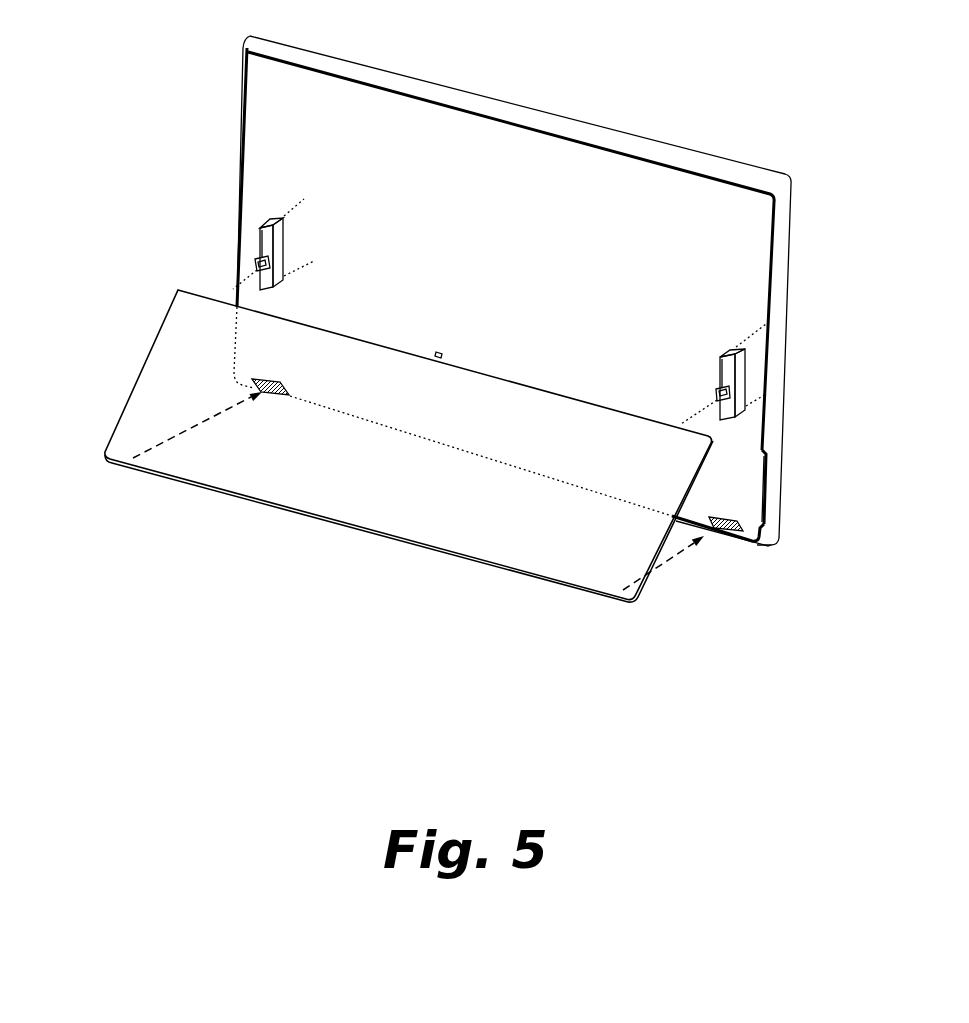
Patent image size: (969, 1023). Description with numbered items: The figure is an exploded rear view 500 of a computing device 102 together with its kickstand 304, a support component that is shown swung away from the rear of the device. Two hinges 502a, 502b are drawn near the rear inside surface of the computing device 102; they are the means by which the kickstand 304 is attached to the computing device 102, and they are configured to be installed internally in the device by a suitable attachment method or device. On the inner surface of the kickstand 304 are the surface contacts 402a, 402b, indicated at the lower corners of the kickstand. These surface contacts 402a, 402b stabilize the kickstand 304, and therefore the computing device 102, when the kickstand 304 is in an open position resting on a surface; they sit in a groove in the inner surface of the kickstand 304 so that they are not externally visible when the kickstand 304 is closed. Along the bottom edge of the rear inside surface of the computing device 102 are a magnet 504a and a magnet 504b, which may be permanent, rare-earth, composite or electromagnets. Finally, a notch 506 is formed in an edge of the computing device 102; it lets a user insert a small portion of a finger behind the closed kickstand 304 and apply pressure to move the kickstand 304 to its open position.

The exploded rear view 500 is at (177, 164).
The computing device 102 is at (263, 34).
The kickstand 304 is at (165, 342).
The hinge 502a is at (280, 250).
The hinge 502b is at (727, 375).
The magnet 504a is at (725, 532).
The magnet 504b is at (270, 398).
The notch 506 is at (769, 484).
The surface contact 402a is at (618, 595).
The surface contact 402b is at (128, 463).